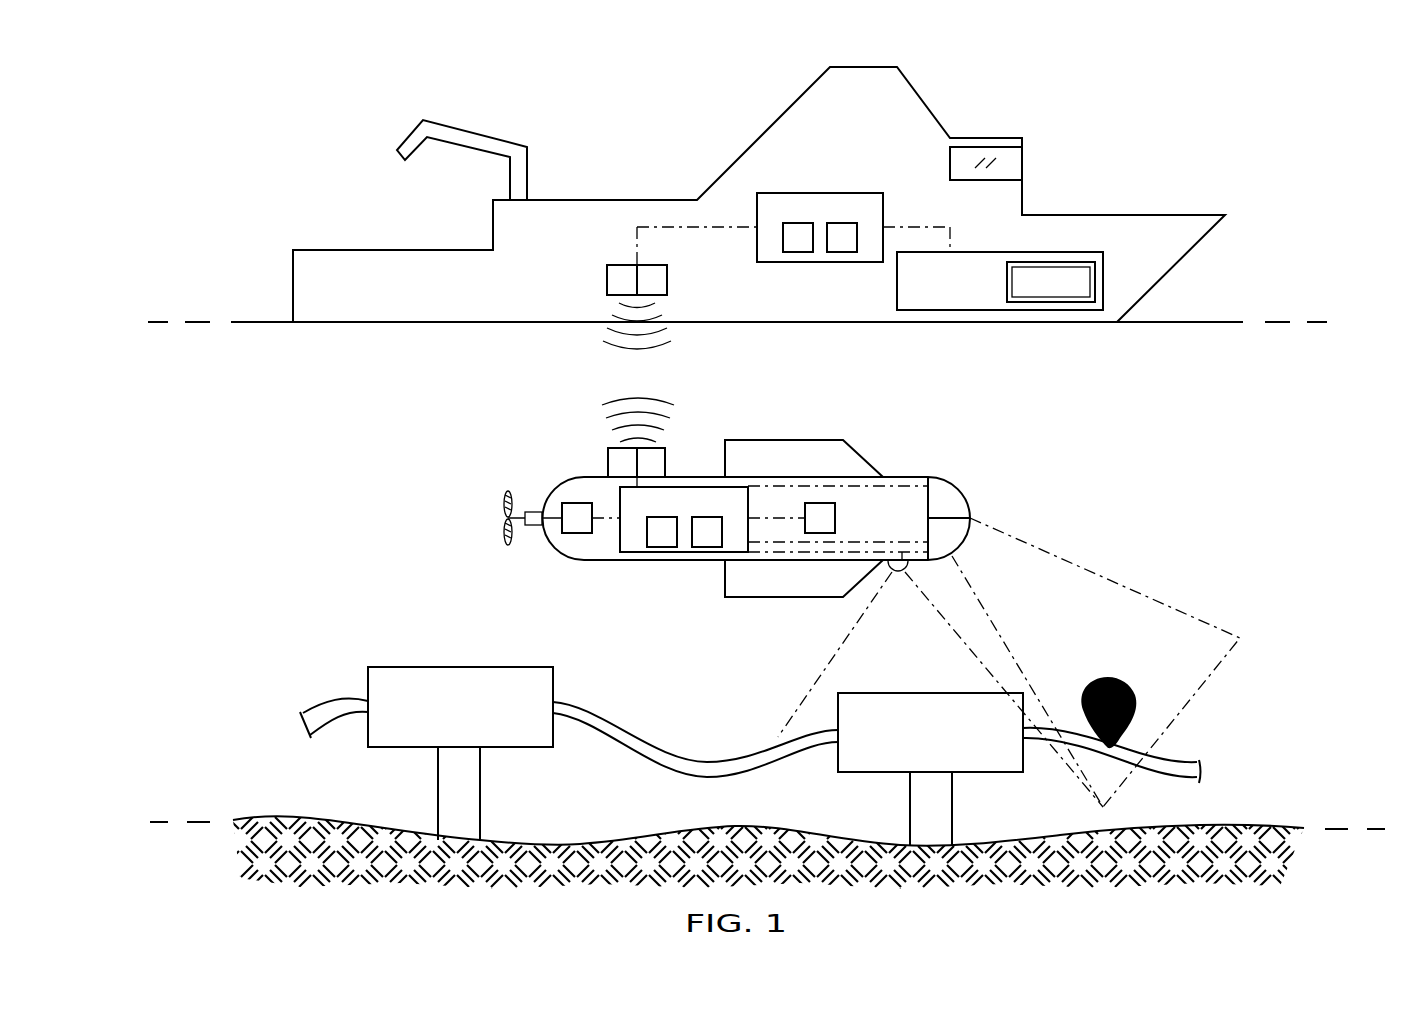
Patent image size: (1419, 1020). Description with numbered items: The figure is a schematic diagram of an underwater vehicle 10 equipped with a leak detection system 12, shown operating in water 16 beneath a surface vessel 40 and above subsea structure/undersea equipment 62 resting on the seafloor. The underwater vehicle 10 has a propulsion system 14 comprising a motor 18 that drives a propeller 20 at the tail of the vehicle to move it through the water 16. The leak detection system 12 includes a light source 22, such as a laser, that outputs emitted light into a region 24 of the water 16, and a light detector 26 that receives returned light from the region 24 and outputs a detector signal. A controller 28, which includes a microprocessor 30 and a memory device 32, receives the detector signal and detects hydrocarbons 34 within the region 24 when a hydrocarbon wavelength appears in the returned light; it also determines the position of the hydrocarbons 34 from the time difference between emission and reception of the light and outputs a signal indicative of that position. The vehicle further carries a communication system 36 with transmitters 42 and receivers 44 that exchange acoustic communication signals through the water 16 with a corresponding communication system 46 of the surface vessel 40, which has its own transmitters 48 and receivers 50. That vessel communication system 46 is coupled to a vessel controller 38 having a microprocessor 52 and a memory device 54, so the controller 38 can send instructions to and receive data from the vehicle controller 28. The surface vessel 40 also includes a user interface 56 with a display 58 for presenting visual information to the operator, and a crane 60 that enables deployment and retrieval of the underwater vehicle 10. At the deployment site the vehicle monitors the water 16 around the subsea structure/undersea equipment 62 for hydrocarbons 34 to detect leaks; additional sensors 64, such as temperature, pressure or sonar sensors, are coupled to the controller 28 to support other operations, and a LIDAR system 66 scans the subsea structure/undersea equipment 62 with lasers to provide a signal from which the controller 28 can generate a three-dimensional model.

The underwater vehicle 10 is at (952, 456).
The leak detection system 12 is at (1011, 449).
The propulsion system 14 is at (576, 581).
The water 16 is at (1104, 498).
The motor 18 is at (577, 533).
The propeller 20 is at (503, 502).
The light source 22 is at (965, 497).
The region 24 is at (1105, 580).
The light detector 26 is at (965, 542).
The controller 28 is at (683, 552).
The microprocessor 30 is at (662, 547).
The memory device 32 is at (707, 547).
The hydrocarbons 34 is at (1146, 698).
The communication system 36 is at (581, 436).
The controller 38 is at (822, 193).
The surface vessel 40 is at (900, 113).
The transmitters 42 is at (608, 462).
The receivers 44 is at (665, 461).
The communication system 46 is at (518, 295).
The transmitters 48 is at (607, 280).
The receivers 50 is at (667, 280).
The microprocessor 52 is at (803, 252).
The memory device 54 is at (847, 252).
The user interface 56 is at (970, 252).
The display 58 is at (1052, 262).
The crane 60 is at (477, 128).
The subsea structure/undersea equipment 62 is at (1207, 718).
The sensors 64 is at (818, 503).
The LIDAR system 66 is at (898, 573).